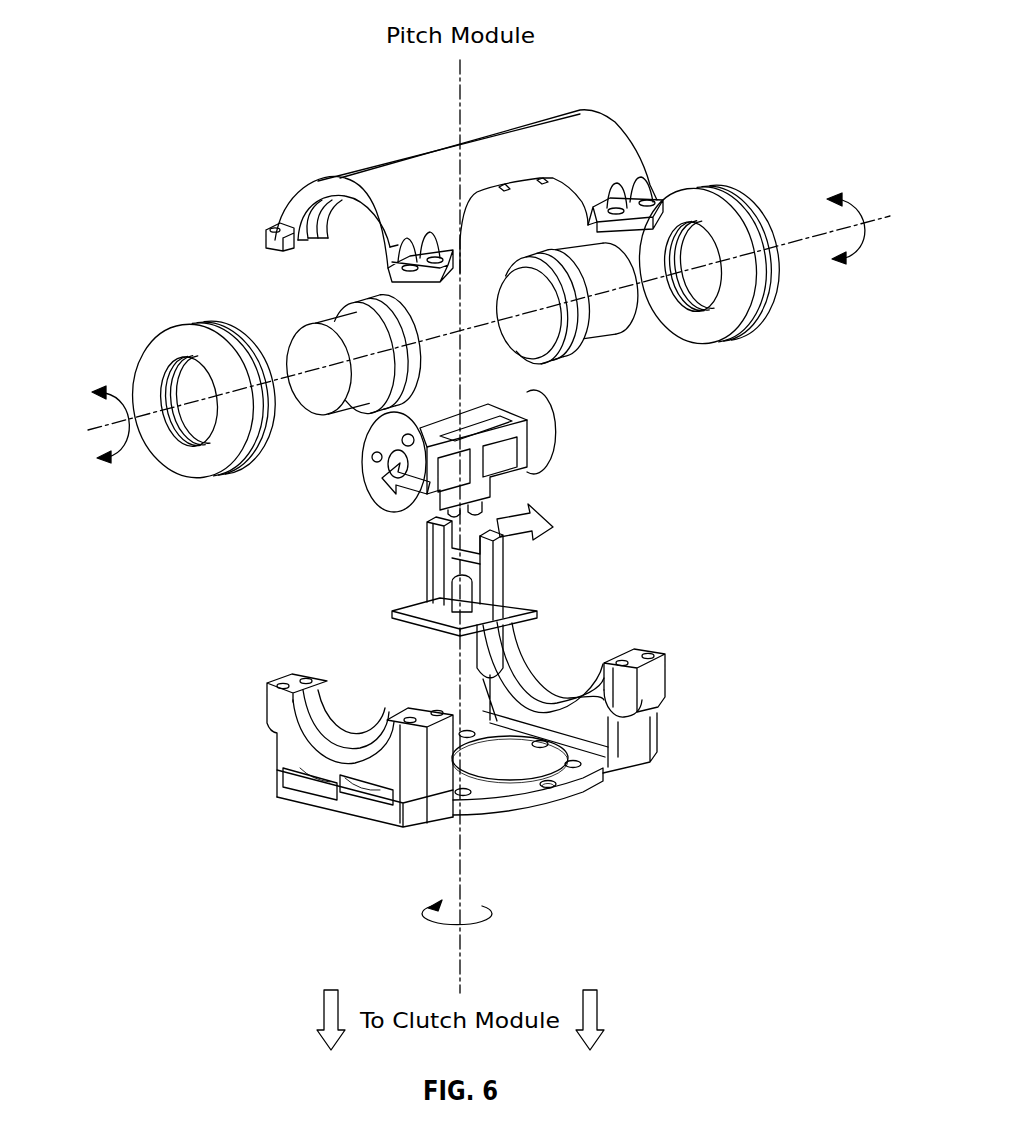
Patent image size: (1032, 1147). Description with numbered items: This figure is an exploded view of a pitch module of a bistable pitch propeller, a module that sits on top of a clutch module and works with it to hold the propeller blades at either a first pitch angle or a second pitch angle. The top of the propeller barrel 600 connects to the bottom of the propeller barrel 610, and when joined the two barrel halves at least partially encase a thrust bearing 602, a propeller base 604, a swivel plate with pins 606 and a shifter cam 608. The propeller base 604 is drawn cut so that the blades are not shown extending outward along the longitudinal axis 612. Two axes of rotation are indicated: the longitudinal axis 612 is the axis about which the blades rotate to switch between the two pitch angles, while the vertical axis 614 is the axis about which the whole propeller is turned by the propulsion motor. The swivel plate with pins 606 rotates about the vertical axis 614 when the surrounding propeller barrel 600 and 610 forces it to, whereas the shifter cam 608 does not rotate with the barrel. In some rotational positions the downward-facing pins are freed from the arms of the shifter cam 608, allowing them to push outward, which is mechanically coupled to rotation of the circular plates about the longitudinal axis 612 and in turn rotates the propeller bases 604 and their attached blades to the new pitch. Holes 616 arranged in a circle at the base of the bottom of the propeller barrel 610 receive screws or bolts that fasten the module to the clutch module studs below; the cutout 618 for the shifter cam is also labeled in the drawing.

The top of propeller barrel 600 is at (318, 180).
The thrust bearing 602 is at (723, 187).
The propeller base 604 is at (617, 340).
The swivel plate with pins 606 is at (395, 512).
The shifter cam 608 is at (505, 577).
The bottom of propeller barrel 610 is at (267, 702).
The longitudinal axis 612 is at (790, 242).
The vertical axis 614 is at (460, 950).
The holes 616 is at (550, 789).
The cutout for shifter cam 618 is at (490, 748).